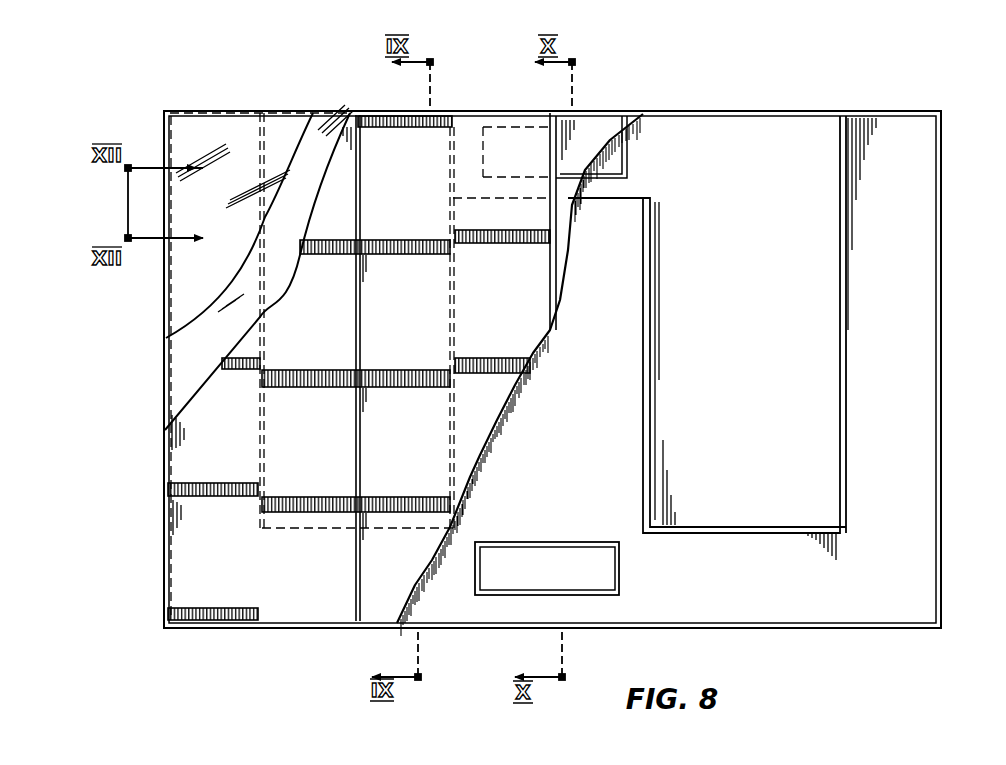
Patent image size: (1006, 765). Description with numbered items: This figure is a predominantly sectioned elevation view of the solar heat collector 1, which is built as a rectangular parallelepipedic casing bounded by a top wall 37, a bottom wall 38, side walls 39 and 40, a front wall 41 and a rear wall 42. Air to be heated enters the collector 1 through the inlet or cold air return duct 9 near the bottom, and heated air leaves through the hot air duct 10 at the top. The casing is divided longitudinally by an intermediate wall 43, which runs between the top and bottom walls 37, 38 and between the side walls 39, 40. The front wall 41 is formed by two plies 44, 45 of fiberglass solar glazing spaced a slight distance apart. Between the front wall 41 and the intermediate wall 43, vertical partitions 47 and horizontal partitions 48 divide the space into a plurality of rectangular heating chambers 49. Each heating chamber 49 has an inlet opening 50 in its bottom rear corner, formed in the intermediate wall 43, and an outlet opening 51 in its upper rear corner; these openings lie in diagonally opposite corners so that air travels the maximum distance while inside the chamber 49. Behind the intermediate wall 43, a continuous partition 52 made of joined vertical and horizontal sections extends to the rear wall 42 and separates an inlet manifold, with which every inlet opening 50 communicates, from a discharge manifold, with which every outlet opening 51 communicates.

The solar heat collector 1 is at (590, 104).
The cold air return duct 9 is at (497, 592).
The hot air duct 10 is at (612, 170).
The top wall 37 is at (475, 113).
The bottom wall 38 is at (339, 628).
The side wall 39 is at (162, 546).
The side wall 40 is at (941, 432).
The front wall 41 is at (165, 310).
The rear wall 42 is at (562, 502).
The intermediate wall 43 is at (473, 430).
The ply of solar glazing 44 is at (239, 232).
The ply of solar glazing 45 is at (272, 303).
The vertical partition 47 is at (362, 187).
The horizontal partition 48 is at (406, 240).
The heating chamber 49 is at (368, 130).
The inlet opening 50 is at (525, 243).
The outlet opening 51 is at (415, 115).
The continuous partition 52 is at (650, 364).